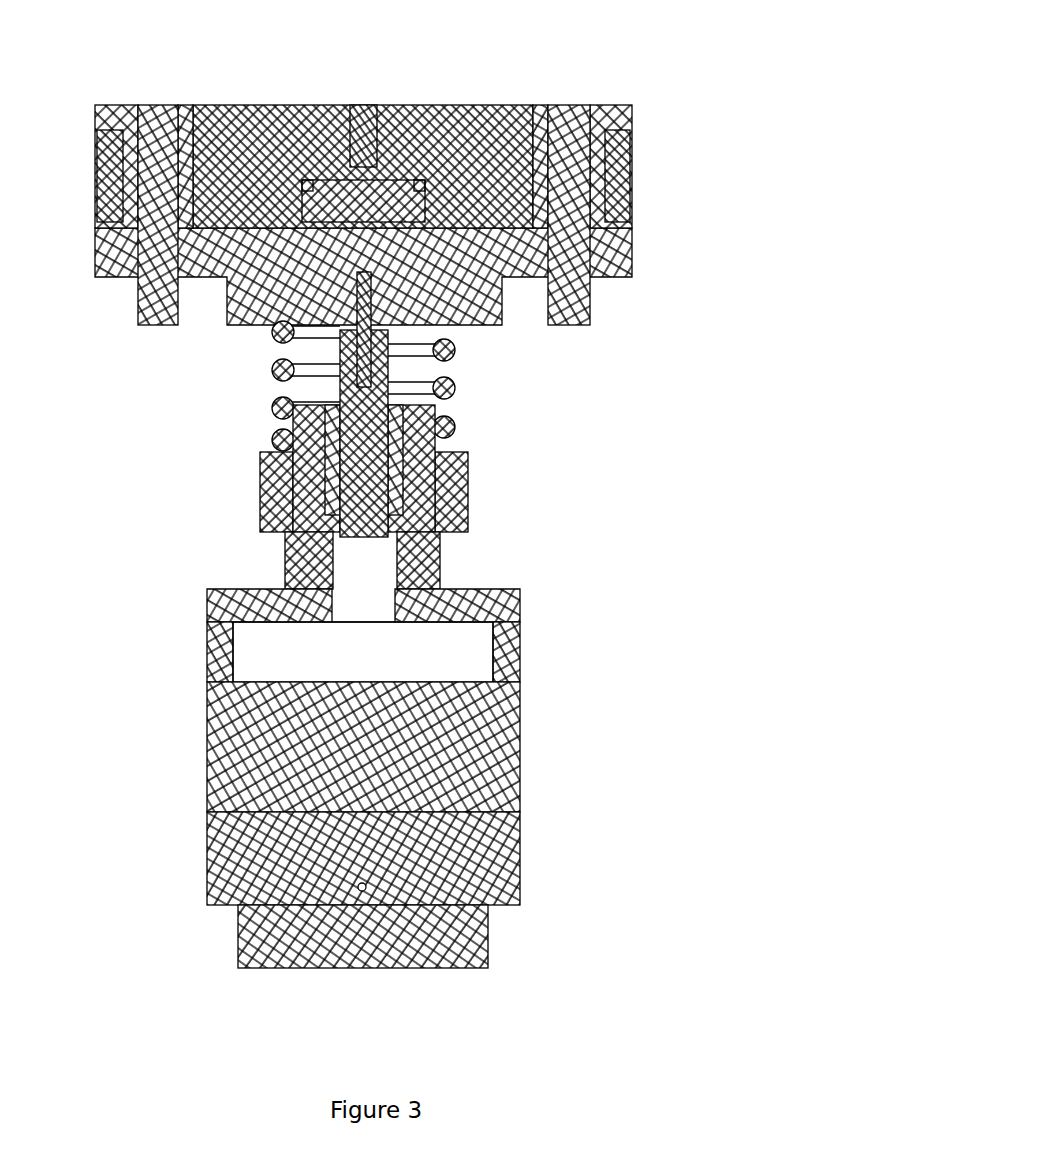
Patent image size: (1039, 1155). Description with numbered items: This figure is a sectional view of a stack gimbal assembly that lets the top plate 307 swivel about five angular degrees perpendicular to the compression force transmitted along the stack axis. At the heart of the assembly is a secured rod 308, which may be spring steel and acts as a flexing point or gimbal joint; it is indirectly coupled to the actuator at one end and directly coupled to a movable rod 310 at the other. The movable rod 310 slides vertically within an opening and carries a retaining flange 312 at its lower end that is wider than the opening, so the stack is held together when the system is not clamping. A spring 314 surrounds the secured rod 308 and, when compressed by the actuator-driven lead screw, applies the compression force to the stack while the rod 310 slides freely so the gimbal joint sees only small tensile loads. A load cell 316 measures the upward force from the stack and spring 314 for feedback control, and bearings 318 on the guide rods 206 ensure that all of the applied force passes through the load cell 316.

The guide rods 206 is at (153, 105).
The load cell 316 is at (382, 196).
The bearings 318 is at (606, 210).
The spring 314 is at (454, 356).
The secured rod 308 is at (356, 372).
The movable rod 310 is at (370, 478).
The retaining flange 312 is at (366, 540).
The top plate 307 is at (454, 970).